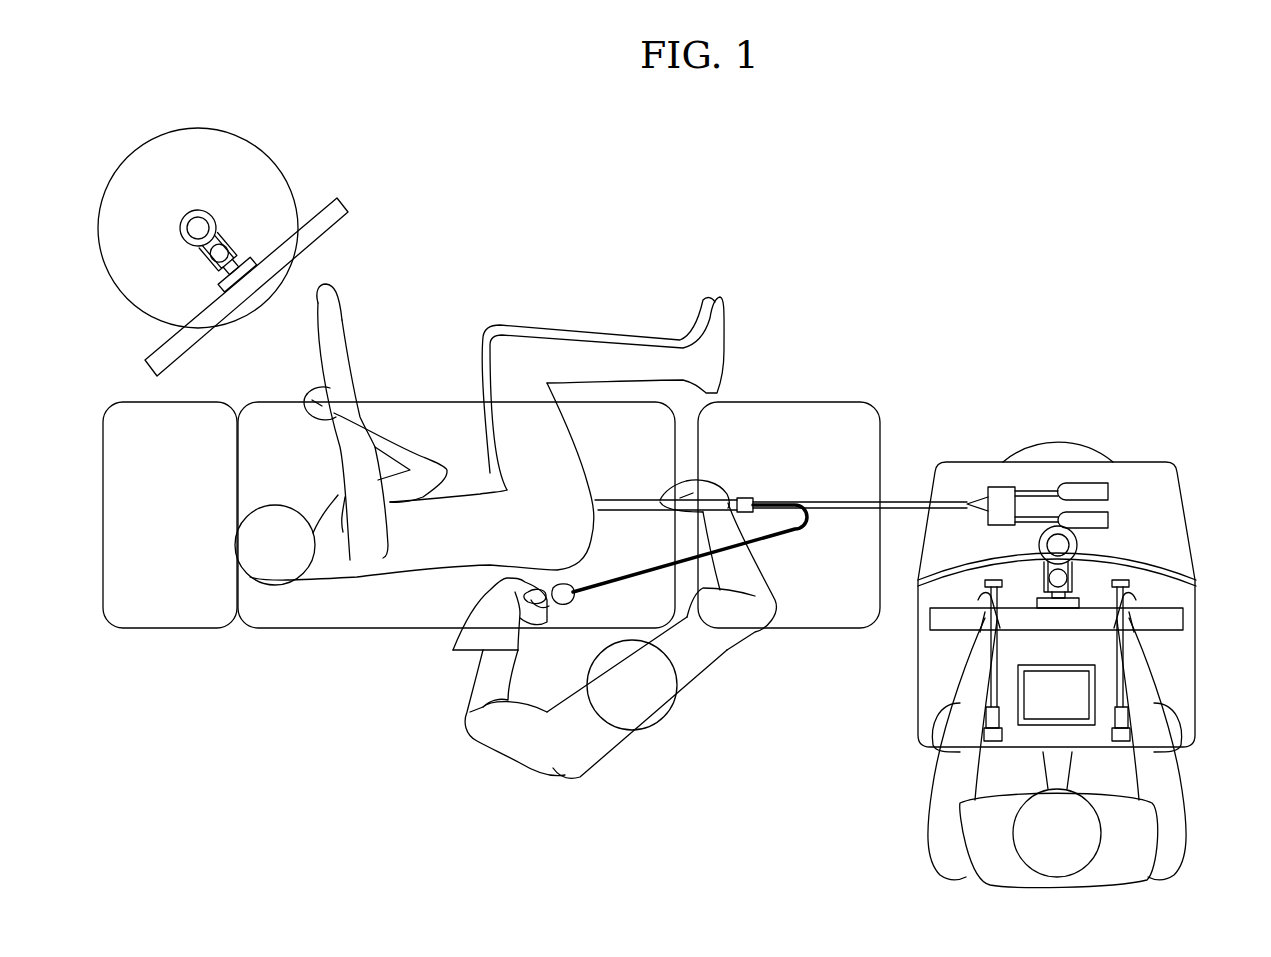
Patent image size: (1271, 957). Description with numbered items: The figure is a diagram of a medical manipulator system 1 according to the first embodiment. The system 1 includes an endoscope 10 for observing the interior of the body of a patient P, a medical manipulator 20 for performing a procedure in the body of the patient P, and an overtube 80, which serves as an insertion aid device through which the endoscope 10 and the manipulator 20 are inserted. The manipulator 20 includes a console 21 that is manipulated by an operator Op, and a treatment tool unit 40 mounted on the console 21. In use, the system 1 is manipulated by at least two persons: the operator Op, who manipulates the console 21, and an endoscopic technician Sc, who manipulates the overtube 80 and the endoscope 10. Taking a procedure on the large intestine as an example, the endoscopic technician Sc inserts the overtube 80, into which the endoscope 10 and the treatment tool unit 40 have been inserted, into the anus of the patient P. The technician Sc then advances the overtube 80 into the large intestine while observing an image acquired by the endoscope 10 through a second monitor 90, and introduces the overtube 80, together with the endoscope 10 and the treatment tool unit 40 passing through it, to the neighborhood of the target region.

The medical manipulator system 1 is at (934, 287).
The endoscope 10 is at (494, 603).
The medical manipulator 20 is at (1060, 438).
The console 21 is at (1173, 497).
The treatment tool unit 40 is at (1087, 487).
The overtube 80 is at (905, 496).
The second monitor 90 is at (326, 206).
The patient P is at (533, 328).
The endoscopic technician Sc is at (625, 750).
The operator Op is at (930, 830).